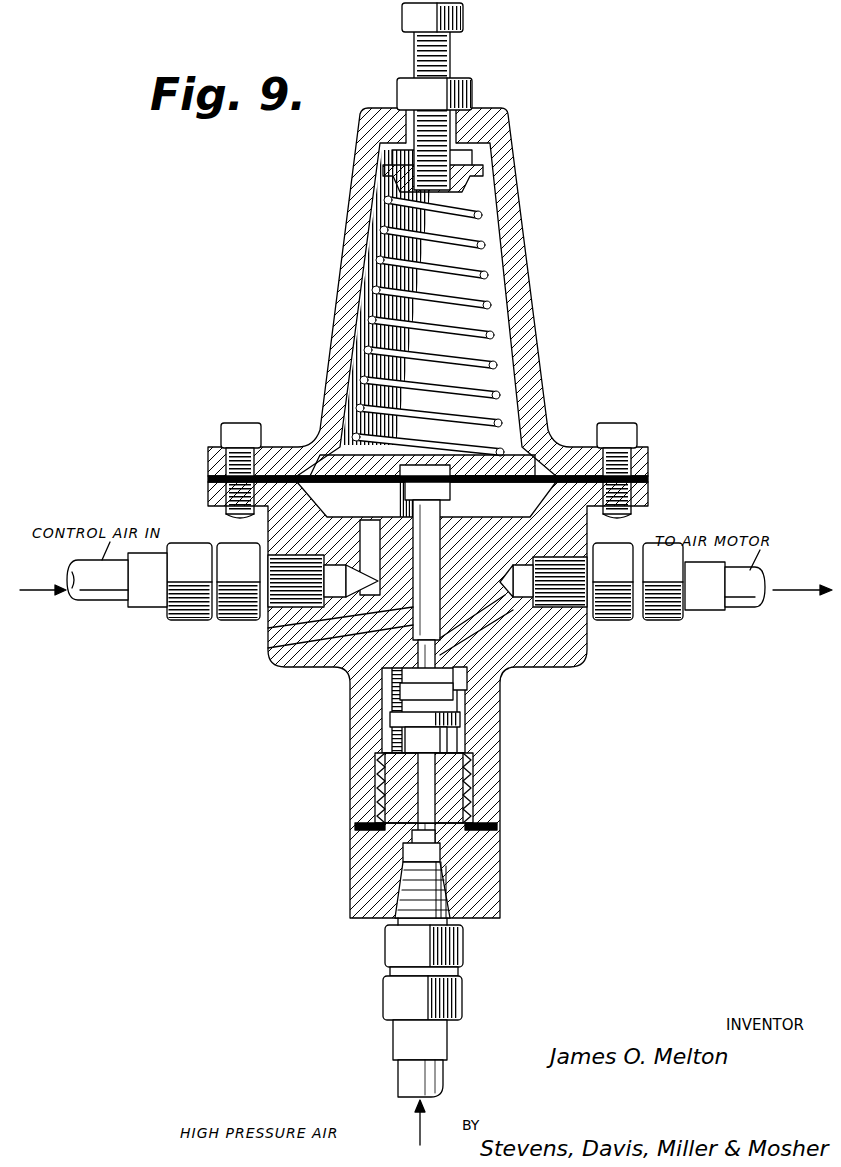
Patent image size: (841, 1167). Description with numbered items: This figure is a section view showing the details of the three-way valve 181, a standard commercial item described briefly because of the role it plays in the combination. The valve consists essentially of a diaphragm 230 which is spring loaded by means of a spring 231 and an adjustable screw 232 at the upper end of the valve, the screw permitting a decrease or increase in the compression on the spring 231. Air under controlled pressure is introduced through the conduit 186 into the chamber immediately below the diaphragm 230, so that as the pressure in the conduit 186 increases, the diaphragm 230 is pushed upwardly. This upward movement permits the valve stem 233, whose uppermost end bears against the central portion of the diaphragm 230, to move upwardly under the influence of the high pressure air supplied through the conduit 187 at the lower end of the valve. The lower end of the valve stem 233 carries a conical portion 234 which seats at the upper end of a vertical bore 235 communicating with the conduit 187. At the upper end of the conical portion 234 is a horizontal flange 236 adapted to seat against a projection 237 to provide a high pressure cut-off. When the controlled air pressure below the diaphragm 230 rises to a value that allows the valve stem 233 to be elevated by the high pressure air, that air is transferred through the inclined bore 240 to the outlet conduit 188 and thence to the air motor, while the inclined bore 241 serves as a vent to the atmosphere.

The three-way valve 181 is at (522, 247).
The conduit 186 is at (100, 600).
The conduit 187 is at (402, 1073).
The outlet conduit 188 is at (742, 605).
The diaphragm 230 is at (523, 481).
The spring 231 is at (493, 365).
The adjustable screw 232 is at (448, 53).
The valve stem 233 is at (432, 700).
The conical portion 234 is at (445, 740).
The vertical bore 235 is at (437, 790).
The horizontal flange 236 is at (395, 718).
The projection 237 is at (460, 680).
The inclined bore 240 is at (470, 620).
The inclined bore 241 is at (268, 645).